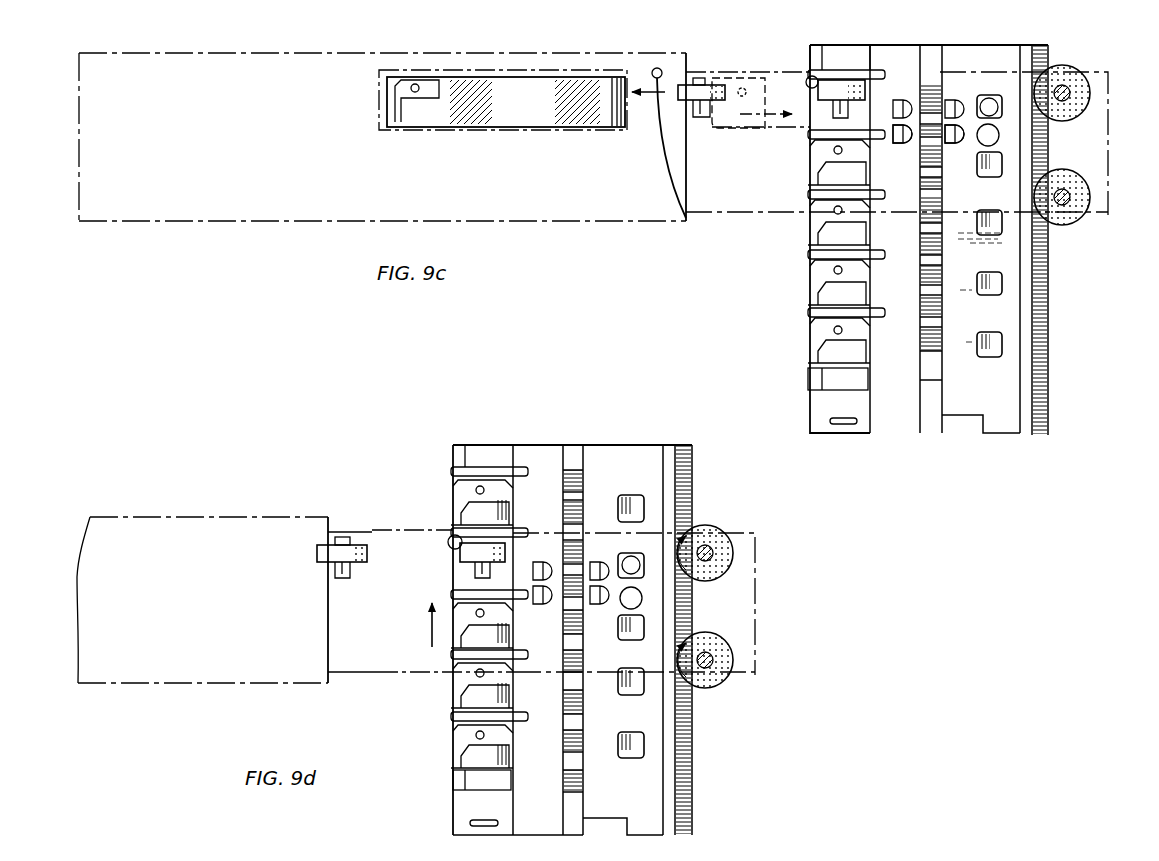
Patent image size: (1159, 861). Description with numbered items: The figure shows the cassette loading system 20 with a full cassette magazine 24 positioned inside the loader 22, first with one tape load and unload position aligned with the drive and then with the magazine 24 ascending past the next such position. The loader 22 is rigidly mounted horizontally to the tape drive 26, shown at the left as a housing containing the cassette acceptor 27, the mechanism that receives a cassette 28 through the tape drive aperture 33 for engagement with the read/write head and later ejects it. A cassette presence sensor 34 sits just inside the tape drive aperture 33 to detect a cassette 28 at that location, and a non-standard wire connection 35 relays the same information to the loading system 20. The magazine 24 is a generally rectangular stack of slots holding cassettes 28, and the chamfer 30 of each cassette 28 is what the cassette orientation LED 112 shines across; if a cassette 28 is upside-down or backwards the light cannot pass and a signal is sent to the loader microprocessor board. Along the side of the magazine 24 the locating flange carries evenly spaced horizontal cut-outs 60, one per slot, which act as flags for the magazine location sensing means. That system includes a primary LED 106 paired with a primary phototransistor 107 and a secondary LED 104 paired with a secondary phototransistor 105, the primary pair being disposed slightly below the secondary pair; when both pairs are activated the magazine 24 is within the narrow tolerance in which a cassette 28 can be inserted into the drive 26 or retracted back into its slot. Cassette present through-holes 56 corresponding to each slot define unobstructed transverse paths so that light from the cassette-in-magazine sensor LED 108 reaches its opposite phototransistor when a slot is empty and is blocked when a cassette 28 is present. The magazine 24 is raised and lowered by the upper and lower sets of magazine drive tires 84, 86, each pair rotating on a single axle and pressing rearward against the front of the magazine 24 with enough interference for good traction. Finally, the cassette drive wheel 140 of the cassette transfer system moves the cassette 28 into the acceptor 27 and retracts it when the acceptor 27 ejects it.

In FIG. 9C, the cassette loading system 20 is at (1042, 42).
In FIG. 9D, the cassette loading system 20 is at (557, 436).
In FIG. 9C, the loader 22 is at (1104, 126).
In FIG. 9D, the loader 22 is at (752, 612).
In FIG. 9C, the cassette magazine 24 is at (897, 433).
In FIG. 9D, the cassette magazine 24 is at (637, 452).
In FIG. 9C, the tape drive 26 is at (323, 53).
In FIG. 9D, the tape drive 26 is at (225, 517).
In FIG. 9C, the cassette acceptor 27 is at (399, 132).
In FIG. 9C, the cassette 28 is at (530, 128).
In FIG. 9C, the chamfer 30 is at (808, 283).
In FIG. 9D, the chamfer 30 is at (453, 497).
In FIG. 9C, the tape drive aperture 33 is at (700, 80).
In FIG. 9C, the cassette presence sensor 34 is at (657, 68).
In FIG. 9C, the non-standard wire connection 35 is at (662, 164).
In FIG. 9C, the cassette present through-holes 56 is at (979, 96).
In FIG. 9D, the cassette present through-holes 56 is at (644, 745).
In FIG. 9C, the horizontal cut-outs 60 is at (928, 307).
In FIG. 9C, the magazine drive tires 84 is at (1068, 184).
In FIG. 9D, the magazine drive tires 84 is at (714, 642).
In FIG. 9C, the magazine drive tires 86 is at (1079, 84).
In FIG. 9D, the magazine drive tires 86 is at (724, 540).
In FIG. 9C, the secondary LED 104 is at (898, 98).
In FIG. 9C, the secondary phototransistor 105 is at (956, 98).
In FIG. 9C, the primary LED 106 is at (896, 143).
In FIG. 9C, the primary phototransistor 107 is at (958, 145).
In FIG. 9C, the cassette-in-magazine sensor LED 108 is at (986, 94).
In FIG. 9D, the cassette-in-magazine sensor LED 108 is at (634, 564).
In FIG. 9C, the cassette orientation LED 112 is at (810, 76).
In FIG. 9D, the cassette orientation LED 112 is at (448, 546).
In FIG. 9C, the cassette drive wheel 140 is at (715, 90).
In FIG. 9D, the cassette drive wheel 140 is at (458, 544).